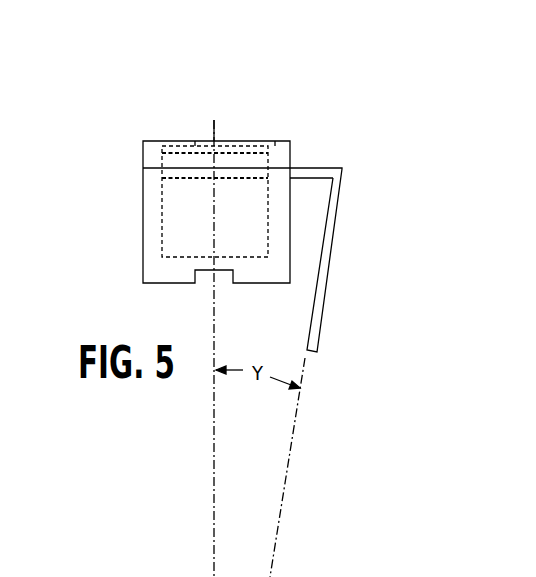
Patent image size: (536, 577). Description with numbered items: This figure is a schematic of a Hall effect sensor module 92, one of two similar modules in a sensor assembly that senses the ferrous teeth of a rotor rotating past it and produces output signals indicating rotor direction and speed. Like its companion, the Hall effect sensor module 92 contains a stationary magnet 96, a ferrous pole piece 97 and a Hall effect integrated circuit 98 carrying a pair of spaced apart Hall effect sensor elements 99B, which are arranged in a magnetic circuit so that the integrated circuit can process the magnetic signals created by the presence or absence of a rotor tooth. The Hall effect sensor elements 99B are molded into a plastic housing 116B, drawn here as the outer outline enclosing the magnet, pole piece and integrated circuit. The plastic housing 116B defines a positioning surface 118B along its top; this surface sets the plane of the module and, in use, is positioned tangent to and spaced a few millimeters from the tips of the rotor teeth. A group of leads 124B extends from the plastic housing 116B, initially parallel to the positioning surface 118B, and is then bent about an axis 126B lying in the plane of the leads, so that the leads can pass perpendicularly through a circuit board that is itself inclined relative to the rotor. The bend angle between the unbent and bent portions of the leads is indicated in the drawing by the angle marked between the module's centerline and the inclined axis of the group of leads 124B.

The Hall effect sensor module 92 is at (222, 141).
The stationary magnet 96 is at (163, 217).
The ferrous pole piece 97 is at (142, 159).
The Hall effect integrated circuit 98 is at (142, 146).
The Hall effect sensor elements 99B is at (195, 140).
The plastic housing 116B is at (145, 263).
The positioning surface 118B is at (275, 140).
The group of leads 124B is at (337, 218).
The axis 126B is at (343, 168).